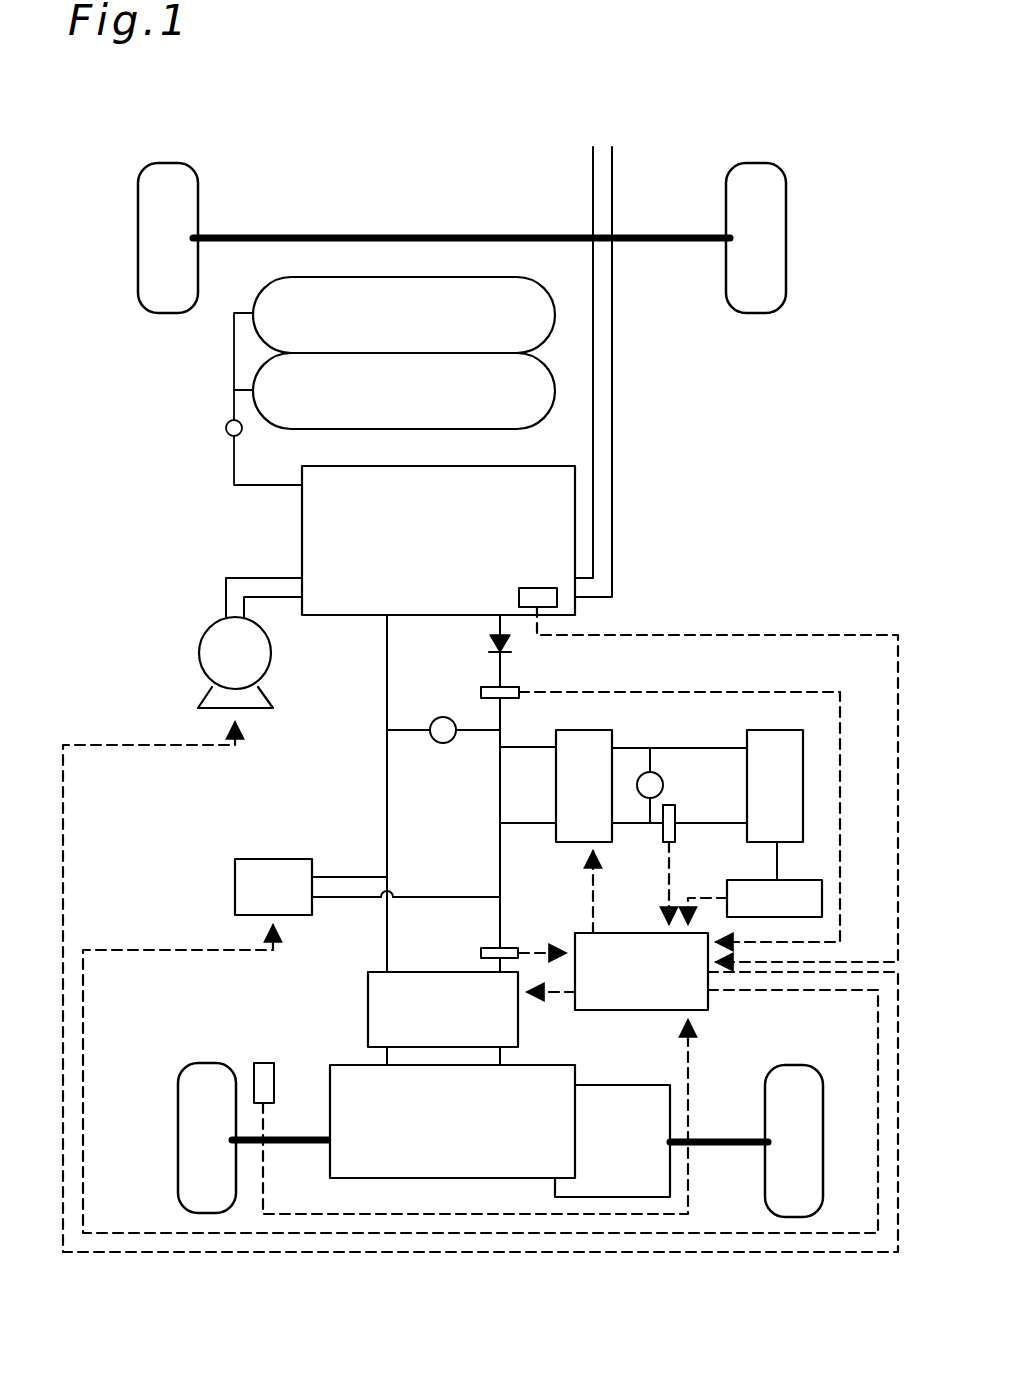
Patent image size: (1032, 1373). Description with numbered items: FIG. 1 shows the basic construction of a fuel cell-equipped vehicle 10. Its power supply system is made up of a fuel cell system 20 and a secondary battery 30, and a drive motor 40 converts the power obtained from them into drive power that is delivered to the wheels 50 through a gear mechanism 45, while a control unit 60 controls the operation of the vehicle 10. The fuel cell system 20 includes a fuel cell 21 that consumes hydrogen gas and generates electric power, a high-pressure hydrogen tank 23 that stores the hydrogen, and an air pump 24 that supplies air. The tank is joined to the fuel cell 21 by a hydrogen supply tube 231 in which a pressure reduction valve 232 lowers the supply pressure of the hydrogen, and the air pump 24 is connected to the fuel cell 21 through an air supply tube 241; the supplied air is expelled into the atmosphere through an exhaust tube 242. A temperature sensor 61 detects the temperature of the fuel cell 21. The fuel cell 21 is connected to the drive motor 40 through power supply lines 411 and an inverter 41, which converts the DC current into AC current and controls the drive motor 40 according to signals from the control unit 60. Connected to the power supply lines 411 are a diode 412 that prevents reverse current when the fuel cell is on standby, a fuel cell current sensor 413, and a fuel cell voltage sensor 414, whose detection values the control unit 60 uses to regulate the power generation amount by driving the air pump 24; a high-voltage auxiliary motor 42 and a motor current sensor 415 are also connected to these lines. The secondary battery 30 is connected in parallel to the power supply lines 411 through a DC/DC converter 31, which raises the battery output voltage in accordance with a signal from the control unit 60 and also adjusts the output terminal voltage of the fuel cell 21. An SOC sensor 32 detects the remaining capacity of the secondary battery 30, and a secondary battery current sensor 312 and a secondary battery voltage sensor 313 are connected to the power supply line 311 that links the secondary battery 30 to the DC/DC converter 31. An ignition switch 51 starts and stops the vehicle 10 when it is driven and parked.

The fuel cell-equipped vehicle 10 is at (808, 580).
The fuel cell system 20 is at (222, 529).
The fuel cell 21 is at (438, 540).
The high-pressure hydrogen tank 23 is at (404, 353).
The hydrogen supply tube 231 is at (234, 485).
The pressure reduction valve 232 is at (229, 423).
The air pump 24 is at (223, 653).
The air supply tube 241 is at (233, 588).
The exhaust pipe 242 is at (612, 510).
The wheels 50 is at (178, 183).
The ignition switch 51 is at (264, 1063).
The temperature sensor 61 is at (537, 592).
The power supply lines 411 is at (500, 675).
The diode 412 is at (496, 644).
The fuel cell current sensor 413 is at (512, 690).
The fuel cell voltage sensor 414 is at (443, 735).
The motor current sensor 415 is at (497, 950).
The DC/DC converter 31 is at (584, 786).
The secondary battery 30 is at (775, 786).
The power supply line 311 is at (714, 823).
The secondary battery current sensor 312 is at (673, 813).
The secondary battery voltage sensor 313 is at (648, 787).
The SOC sensor 32 is at (755, 883).
The high-voltage auxiliary motor 42 is at (480, 1046).
The inverter 41 is at (471, 1009).
The drive motor 40 is at (452, 1121).
The gear mechanism 45 is at (612, 1141).
The control unit 60 is at (641, 930).